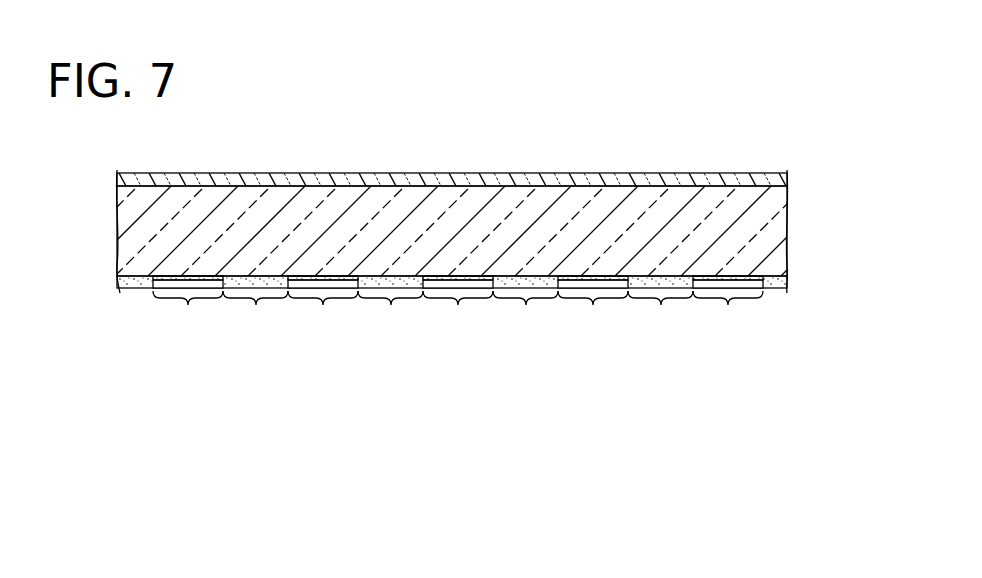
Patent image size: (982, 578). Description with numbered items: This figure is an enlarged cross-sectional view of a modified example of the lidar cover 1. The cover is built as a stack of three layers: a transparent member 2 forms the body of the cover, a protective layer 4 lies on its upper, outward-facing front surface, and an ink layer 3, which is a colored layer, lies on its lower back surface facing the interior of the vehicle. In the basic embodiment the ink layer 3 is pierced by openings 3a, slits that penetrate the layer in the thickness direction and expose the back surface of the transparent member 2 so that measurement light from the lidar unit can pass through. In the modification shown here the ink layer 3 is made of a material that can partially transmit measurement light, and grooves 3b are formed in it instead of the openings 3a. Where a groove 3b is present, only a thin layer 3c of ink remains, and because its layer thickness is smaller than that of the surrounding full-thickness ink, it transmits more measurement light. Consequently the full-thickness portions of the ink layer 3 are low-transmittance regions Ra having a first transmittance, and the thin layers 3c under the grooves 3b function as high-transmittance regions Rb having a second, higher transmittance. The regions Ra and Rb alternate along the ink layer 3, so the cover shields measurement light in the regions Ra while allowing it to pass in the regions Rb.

The lidar cover 1 is at (815, 172).
The transparent member 2 is at (780, 220).
The ink layer 3 is at (495, 212).
The opening 3a is at (207, 277).
The groove 3b is at (157, 284).
The thin layer 3c is at (470, 277).
The protective layer 4 is at (525, 183).
The low-transmittance region Ra is at (458, 317).
The high-transmittance region Rb is at (458, 317).